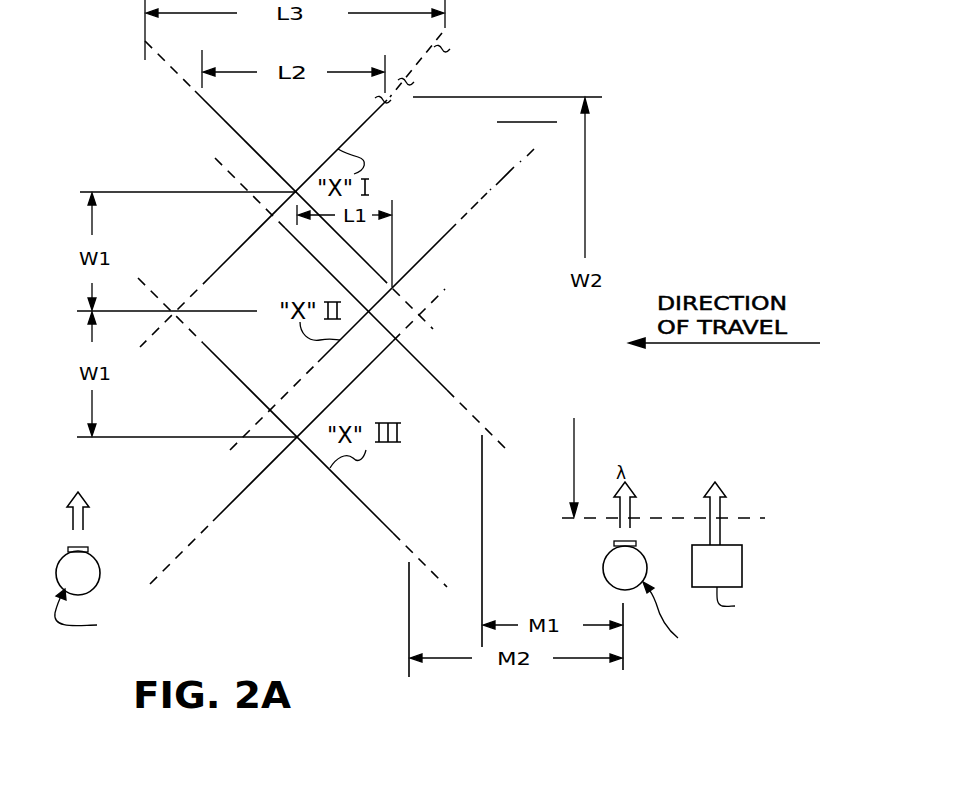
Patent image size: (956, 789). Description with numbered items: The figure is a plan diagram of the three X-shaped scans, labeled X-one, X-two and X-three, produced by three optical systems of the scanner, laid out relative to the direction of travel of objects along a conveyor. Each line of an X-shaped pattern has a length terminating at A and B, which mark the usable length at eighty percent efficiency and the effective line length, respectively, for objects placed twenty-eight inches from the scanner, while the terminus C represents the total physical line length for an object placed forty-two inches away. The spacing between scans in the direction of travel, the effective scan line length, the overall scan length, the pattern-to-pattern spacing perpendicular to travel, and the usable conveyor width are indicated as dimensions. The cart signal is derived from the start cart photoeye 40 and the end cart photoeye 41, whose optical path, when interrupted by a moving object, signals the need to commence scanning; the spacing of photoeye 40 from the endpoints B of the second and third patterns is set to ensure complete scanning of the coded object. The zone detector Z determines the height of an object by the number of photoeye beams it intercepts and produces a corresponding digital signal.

The start cart photoeye 40 is at (603, 568).
The end cart photoeye 41 is at (101, 565).
The usable length terminus A is at (391, 111).
The effective line length terminus B is at (416, 83).
The total physical line length terminus C is at (452, 50).
The zone detector Z is at (692, 573).